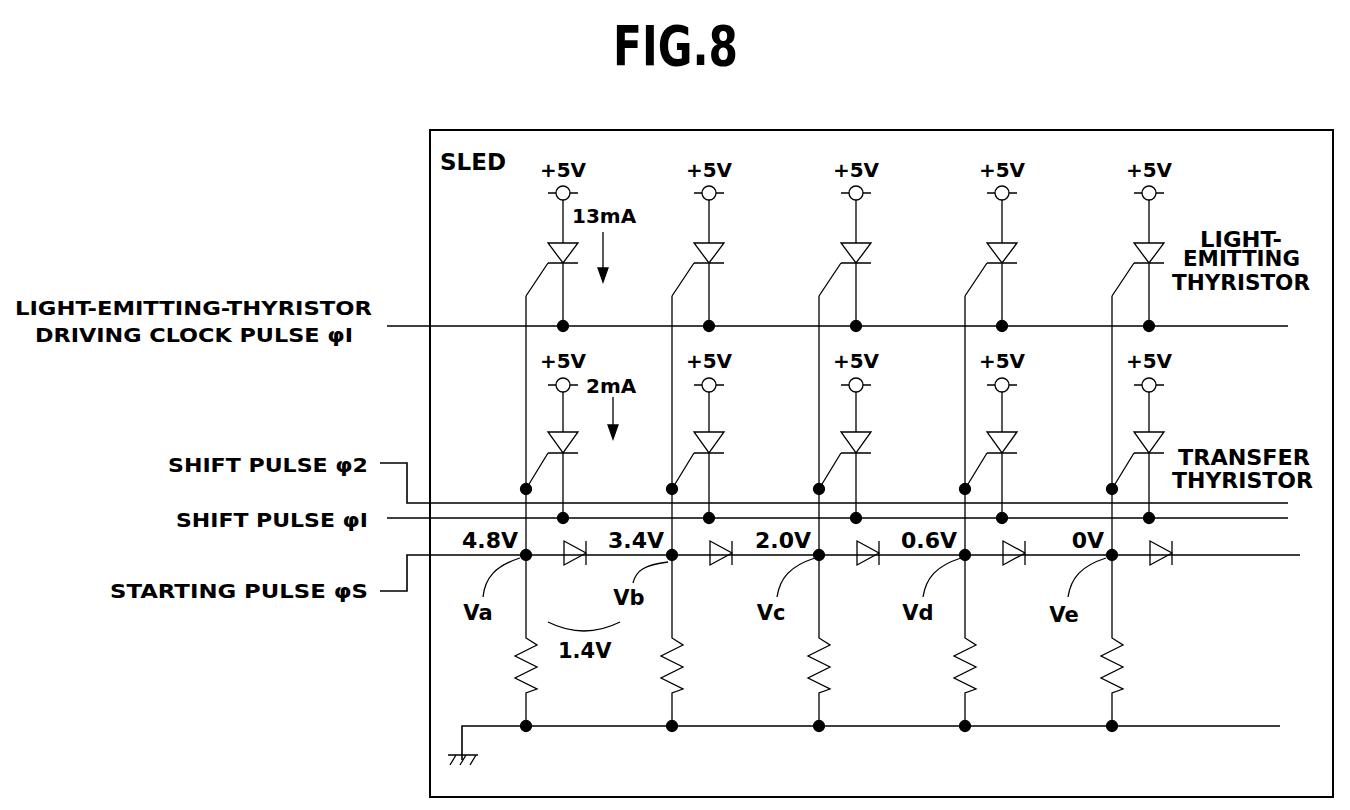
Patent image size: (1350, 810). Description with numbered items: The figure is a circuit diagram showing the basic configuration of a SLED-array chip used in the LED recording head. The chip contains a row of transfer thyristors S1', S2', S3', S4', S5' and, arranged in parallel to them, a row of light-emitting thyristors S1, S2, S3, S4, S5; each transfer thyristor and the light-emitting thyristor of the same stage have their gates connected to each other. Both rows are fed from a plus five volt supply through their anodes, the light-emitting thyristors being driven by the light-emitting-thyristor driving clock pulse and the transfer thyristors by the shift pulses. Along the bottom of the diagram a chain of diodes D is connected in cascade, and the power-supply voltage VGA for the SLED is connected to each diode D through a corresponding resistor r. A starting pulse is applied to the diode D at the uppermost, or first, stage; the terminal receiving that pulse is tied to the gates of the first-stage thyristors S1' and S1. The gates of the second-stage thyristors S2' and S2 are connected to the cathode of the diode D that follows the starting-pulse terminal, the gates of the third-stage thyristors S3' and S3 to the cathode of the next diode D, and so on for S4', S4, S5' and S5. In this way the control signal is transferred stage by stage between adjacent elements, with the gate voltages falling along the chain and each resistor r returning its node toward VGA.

The light-emitting thyristor S1 is at (540, 259).
The light-emitting thyristor S2 is at (686, 259).
The light-emitting thyristor S3 is at (833, 259).
The light-emitting thyristor S4 is at (979, 259).
The light-emitting thyristor S5 is at (1126, 259).
The transfer thyristor S1' is at (571, 451).
The transfer thyristor S2' is at (715, 451).
The transfer thyristor S3' is at (862, 451).
The transfer thyristor S4' is at (1008, 451).
The transfer thyristor S5' is at (1155, 451).
The diode D is at (868, 574).
The resistor r is at (896, 514).
The power-supply voltage VGA is at (864, 749).